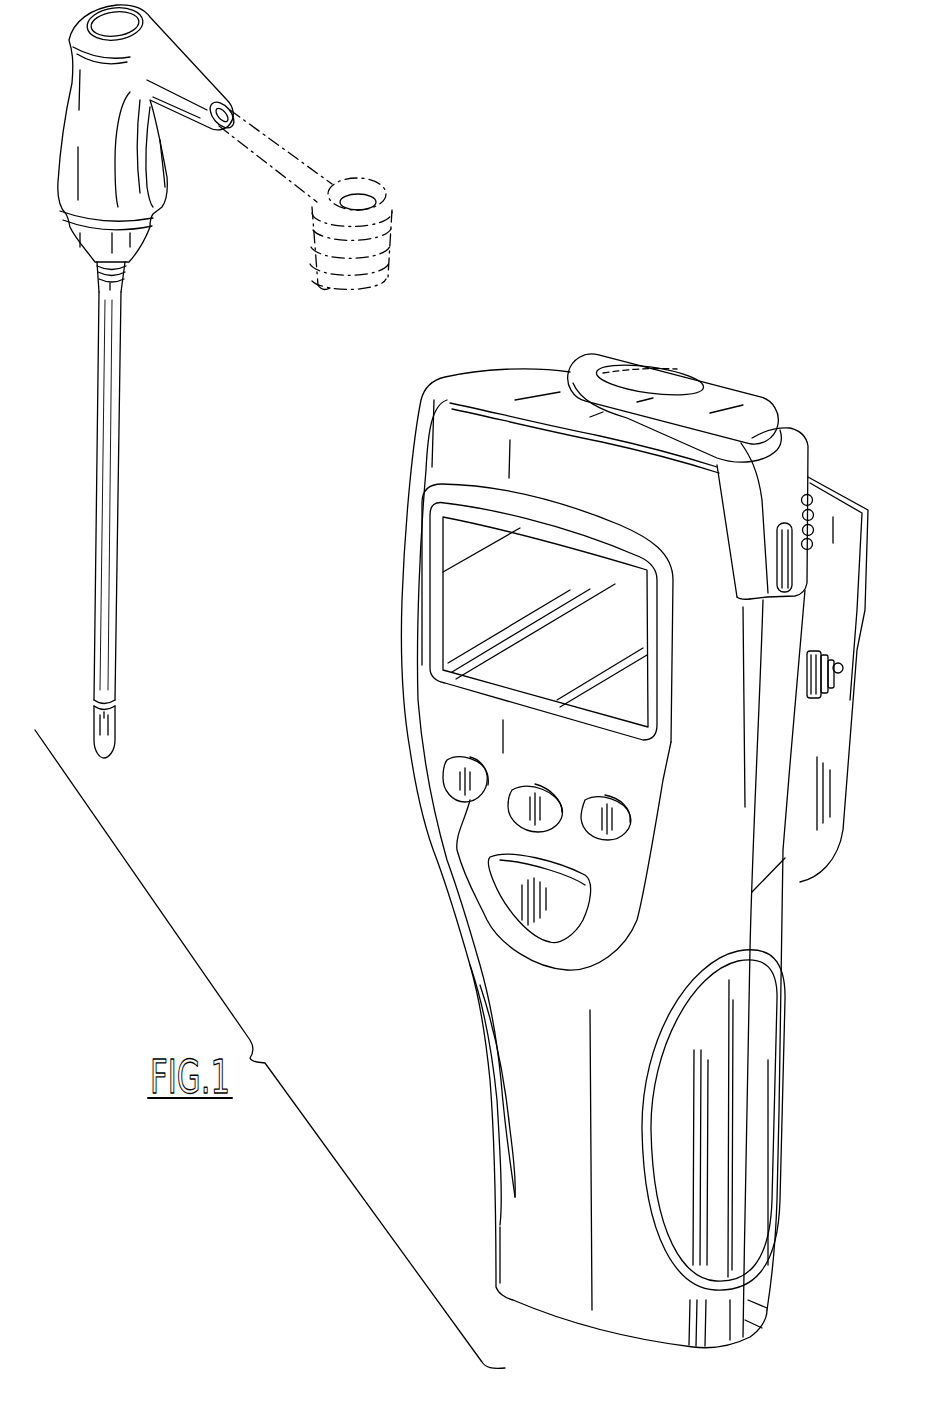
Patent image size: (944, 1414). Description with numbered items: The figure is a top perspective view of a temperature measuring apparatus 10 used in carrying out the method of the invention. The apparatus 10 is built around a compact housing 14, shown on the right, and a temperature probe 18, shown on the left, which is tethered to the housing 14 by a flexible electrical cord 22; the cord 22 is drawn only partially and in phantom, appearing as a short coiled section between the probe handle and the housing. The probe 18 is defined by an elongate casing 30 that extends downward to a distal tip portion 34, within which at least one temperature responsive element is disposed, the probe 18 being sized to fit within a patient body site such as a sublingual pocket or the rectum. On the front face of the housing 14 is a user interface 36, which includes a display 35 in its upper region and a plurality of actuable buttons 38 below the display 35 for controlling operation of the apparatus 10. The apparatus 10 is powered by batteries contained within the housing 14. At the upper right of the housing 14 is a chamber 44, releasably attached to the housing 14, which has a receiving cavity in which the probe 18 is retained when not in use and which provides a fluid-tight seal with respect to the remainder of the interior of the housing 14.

The temperature measuring apparatus 10 is at (496, 282).
The housing 14 is at (417, 782).
The temperature probe 18 is at (116, 354).
The flexible electrical cord 22 is at (308, 160).
The elongate casing 30 is at (118, 644).
The distal tip portion 34 is at (118, 726).
The display 35 is at (438, 627).
The user interface 36 is at (452, 807).
The actuable buttons 38 is at (527, 805).
The chamber 44 is at (788, 466).